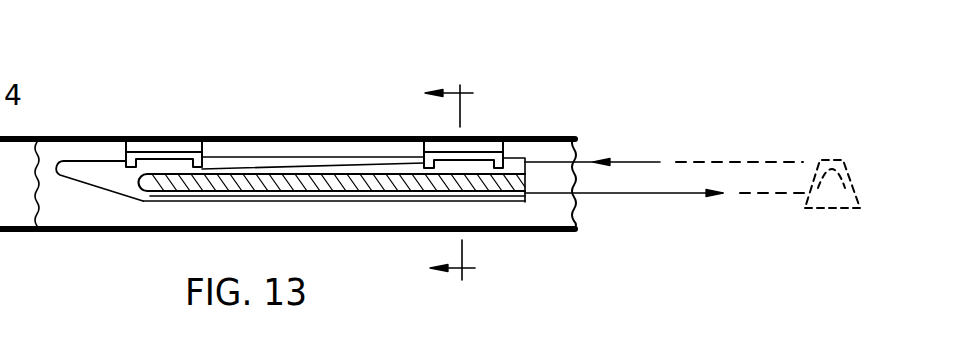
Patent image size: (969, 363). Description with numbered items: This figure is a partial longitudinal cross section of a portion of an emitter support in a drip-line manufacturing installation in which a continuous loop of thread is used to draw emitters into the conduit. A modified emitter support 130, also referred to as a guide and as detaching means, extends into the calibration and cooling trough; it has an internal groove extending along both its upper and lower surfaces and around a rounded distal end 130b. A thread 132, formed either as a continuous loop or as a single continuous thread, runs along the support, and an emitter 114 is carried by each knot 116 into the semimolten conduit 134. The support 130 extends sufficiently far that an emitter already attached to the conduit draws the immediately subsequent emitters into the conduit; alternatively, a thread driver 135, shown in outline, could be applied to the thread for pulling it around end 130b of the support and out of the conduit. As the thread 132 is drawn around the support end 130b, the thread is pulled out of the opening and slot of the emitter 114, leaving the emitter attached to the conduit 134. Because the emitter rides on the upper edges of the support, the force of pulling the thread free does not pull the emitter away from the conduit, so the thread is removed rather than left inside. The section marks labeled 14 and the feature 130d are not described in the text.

The section line 14- 14 is at (452, 185).
The emitter 114 is at (142, 148).
The knot 116 is at (432, 163).
The emitter support 130 is at (340, 157).
The rounded distal end 130b is at (141, 197).
The tab of sleeve 130d is at (262, 157).
The thread 132 is at (632, 162).
The semimolten conduit 134 is at (100, 137).
The thread driver 135 is at (865, 187).